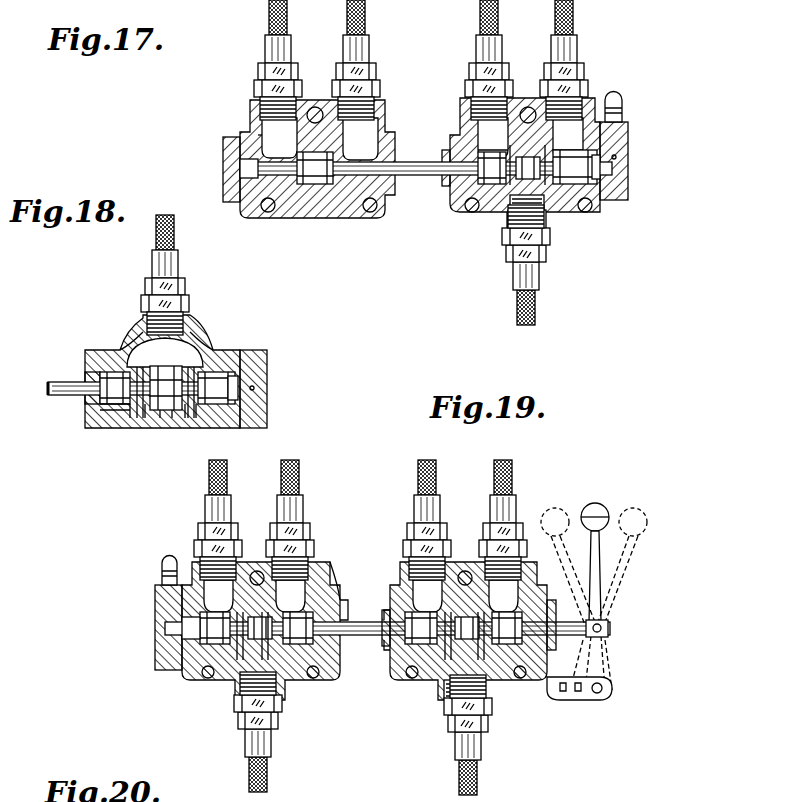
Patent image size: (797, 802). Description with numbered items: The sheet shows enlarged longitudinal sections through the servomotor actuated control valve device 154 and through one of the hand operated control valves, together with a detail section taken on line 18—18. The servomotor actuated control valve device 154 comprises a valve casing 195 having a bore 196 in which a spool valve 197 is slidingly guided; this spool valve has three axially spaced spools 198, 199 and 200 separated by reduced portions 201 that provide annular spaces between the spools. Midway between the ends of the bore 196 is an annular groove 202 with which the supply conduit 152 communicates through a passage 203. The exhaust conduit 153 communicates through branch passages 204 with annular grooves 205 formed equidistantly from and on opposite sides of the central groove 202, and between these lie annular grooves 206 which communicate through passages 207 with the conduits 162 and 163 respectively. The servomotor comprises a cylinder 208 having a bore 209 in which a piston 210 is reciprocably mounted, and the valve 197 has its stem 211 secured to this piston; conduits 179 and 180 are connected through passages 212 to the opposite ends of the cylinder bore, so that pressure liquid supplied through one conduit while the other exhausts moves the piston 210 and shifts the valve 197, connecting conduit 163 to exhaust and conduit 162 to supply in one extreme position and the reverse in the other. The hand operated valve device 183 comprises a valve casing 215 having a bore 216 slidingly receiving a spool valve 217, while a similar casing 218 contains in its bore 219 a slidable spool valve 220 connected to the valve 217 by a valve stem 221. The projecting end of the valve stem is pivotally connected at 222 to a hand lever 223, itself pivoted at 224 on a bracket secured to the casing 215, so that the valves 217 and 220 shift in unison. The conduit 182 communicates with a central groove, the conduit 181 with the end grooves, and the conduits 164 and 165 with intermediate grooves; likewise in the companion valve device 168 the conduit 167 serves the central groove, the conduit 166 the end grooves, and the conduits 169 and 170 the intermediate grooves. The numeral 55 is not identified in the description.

In FIG. 17, the valve block 55 is at (345, 220).
In FIG. 17, the supply conduit 152 is at (518, 310).
In FIG. 18, the exhaust conduit 153 is at (153, 270).
In FIG. 17, the servomotor actuated control valve device 154 is at (490, 211).
In FIG. 18, the servomotor actuated control valve device 154 is at (118, 430).
In FIG. 17, the conduit 162 is at (480, 13).
In FIG. 17, the conduit 163 is at (575, 21).
In FIG. 19, the conduit 164 is at (427, 487).
In FIG. 19, the conduit 165 is at (518, 475).
In FIG. 19, the conduit 166 is at (257, 571).
In FIG. 19, the conduit 167 is at (270, 776).
In FIG. 19, the control valve device 168 is at (304, 586).
In FIG. 19, the conduit 169 is at (210, 491).
In FIG. 19, the conduit 170 is at (300, 488).
In FIG. 17, the conduit 179 is at (270, 20).
In FIG. 17, the conduit 180 is at (366, 24).
In FIG. 19, the conduit 181 is at (459, 560).
In FIG. 19, the conduit 182 is at (486, 790).
In FIG. 19, the valve device 183 is at (413, 681).
In FIG. 17, the valve casing 195 is at (602, 210).
In FIG. 17, the bore 196 is at (624, 113).
In FIG. 17, the spool valve 197 is at (462, 195).
In FIG. 18, the spool valve 197 is at (99, 412).
In FIG. 17, the spool 198 is at (468, 166).
In FIG. 18, the spool 198 is at (108, 396).
In FIG. 17, the spool 199 is at (525, 152).
In FIG. 18, the spool 199 is at (190, 350).
In FIG. 17, the spool 200 is at (580, 155).
In FIG. 18, the spool 200 is at (218, 392).
In FIG. 17, the reduced portions 201 is at (477, 150).
In FIG. 18, the reduced portions 201 is at (137, 382).
In FIG. 17, the annular groove 202 is at (530, 145).
In FIG. 18, the annular groove 202 is at (166, 418).
In FIG. 17, the passage 203 is at (541, 228).
In FIG. 18, the branch passages 204 is at (138, 350).
In FIG. 17, the annular grooves 205 is at (628, 188).
In FIG. 18, the annular grooves 205 is at (123, 431).
In FIG. 17, the annular grooves 206 is at (518, 208).
In FIG. 18, the annular grooves 206 is at (143, 418).
In FIG. 17, the passages 207 is at (492, 127).
In FIG. 17, the cylinder 208 is at (300, 196).
In FIG. 17, the bore 209 is at (313, 120).
In FIG. 17, the piston 210 is at (335, 192).
In FIG. 17, the stem 211 is at (409, 161).
In FIG. 17, the passages 212 is at (262, 132).
In FIG. 19, the valve casing 215 is at (441, 692).
In FIG. 19, the bore 216 is at (532, 580).
In FIG. 19, the spool valve 217 is at (407, 665).
In FIG. 19, the casing 218 is at (198, 662).
In FIG. 19, the bore 219 is at (330, 592).
In FIG. 19, the spool valve 220 is at (198, 632).
In FIG. 19, the valve stem 221 is at (358, 621).
In FIG. 19, the pivotal connection 222 is at (606, 625).
In FIG. 19, the hand lever 223 is at (600, 600).
In FIG. 19, the pivot 224 is at (604, 690).
In FIG. 17, the section line 18 is at (427, 166).